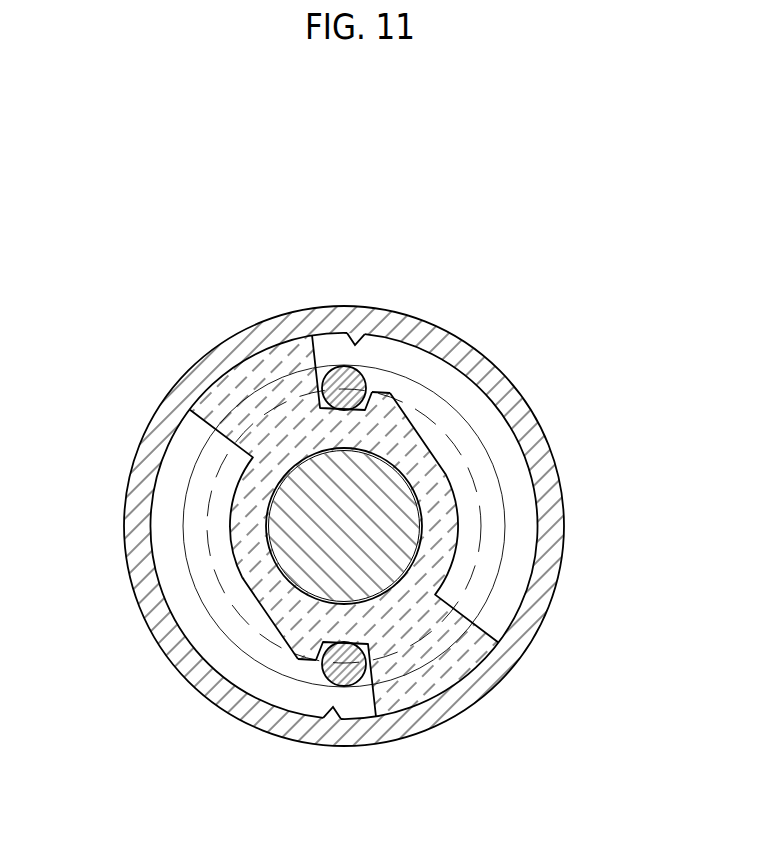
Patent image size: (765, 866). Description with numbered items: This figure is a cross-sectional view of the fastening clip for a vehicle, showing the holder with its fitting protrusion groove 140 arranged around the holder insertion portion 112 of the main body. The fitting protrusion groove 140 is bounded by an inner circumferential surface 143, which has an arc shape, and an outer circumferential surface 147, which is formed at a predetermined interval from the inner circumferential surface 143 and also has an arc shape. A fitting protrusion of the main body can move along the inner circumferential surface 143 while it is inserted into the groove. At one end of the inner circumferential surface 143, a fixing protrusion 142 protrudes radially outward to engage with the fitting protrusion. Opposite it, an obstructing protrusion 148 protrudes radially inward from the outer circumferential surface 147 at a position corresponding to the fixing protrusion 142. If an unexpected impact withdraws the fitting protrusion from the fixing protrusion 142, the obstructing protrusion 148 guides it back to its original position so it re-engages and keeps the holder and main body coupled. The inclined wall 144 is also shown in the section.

The holder insertion portion 112 is at (340, 378).
The fitting protrusion groove 140 is at (528, 498).
The fixing protrusion 142 is at (386, 374).
The inner circumferential surface 143 is at (480, 560).
The inclined wall 144 is at (414, 430).
The outer circumferential surface 147 is at (507, 403).
The obstructing protrusion 148 is at (355, 345).